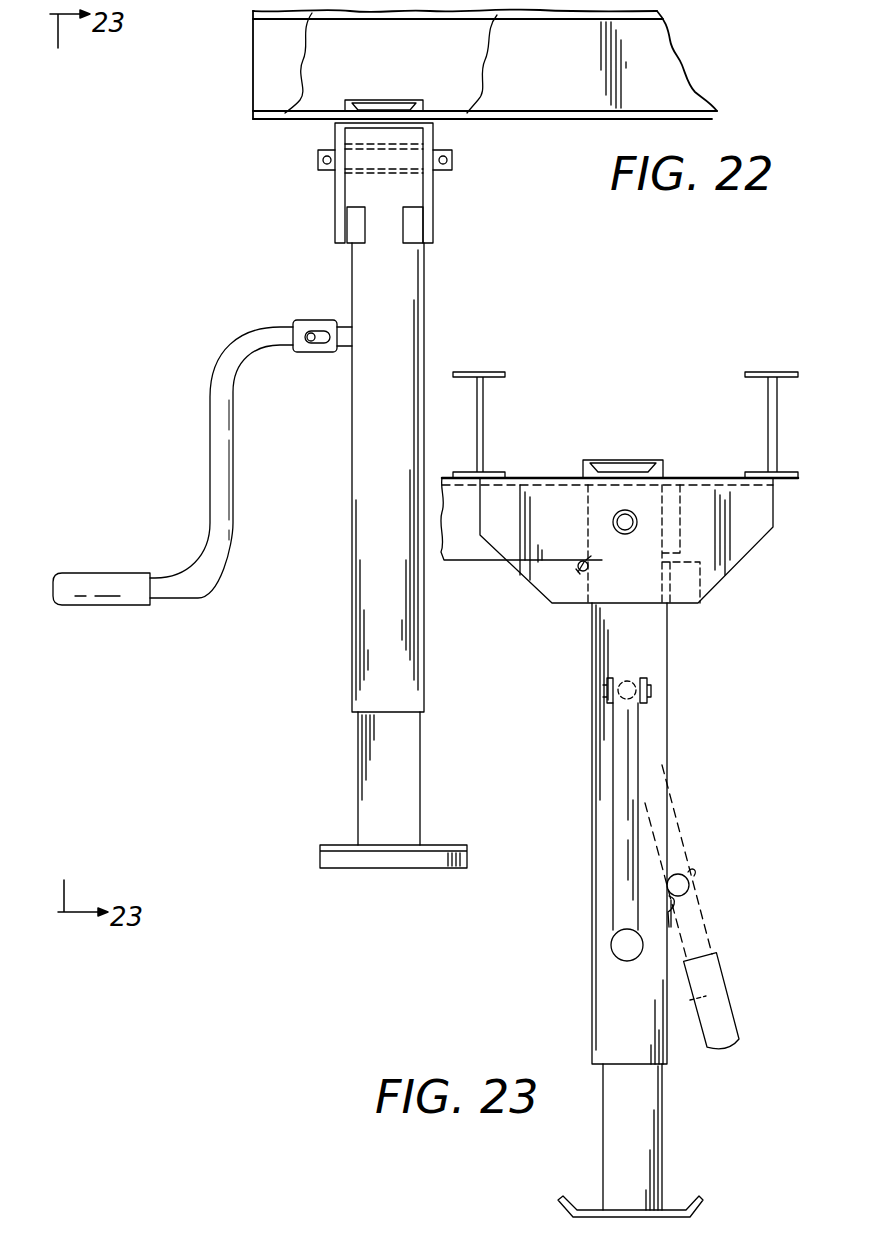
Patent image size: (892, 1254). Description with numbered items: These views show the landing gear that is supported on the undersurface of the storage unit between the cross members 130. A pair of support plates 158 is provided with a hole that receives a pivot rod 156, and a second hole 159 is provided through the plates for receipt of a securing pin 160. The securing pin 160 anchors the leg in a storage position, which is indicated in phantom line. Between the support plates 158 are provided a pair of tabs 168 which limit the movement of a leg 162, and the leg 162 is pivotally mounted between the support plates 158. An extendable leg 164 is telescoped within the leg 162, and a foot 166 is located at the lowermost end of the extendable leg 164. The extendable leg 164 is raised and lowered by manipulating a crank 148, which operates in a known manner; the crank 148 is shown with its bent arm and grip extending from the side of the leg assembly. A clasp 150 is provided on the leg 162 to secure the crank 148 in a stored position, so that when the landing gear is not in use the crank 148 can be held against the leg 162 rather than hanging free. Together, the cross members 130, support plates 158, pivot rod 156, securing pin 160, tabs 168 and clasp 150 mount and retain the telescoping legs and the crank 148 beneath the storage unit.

In FIG. 23, the cross members 130 is at (522, 362).
In FIG. 22, the crank 148 is at (218, 388).
In FIG. 23, the clasp 150 is at (693, 876).
In FIG. 23, the pivot rod 156 is at (630, 511).
In FIG. 23, the support plates 158 is at (752, 523).
In FIG. 23, the second hole 159 is at (580, 572).
In FIG. 23, the securing pin 160 is at (573, 570).
In FIG. 23, the leg 162 is at (648, 617).
In FIG. 23, the extendable leg 164 is at (643, 1093).
In FIG. 23, the foot 166 is at (705, 1208).
In FIG. 22, the tabs 168 is at (357, 235).